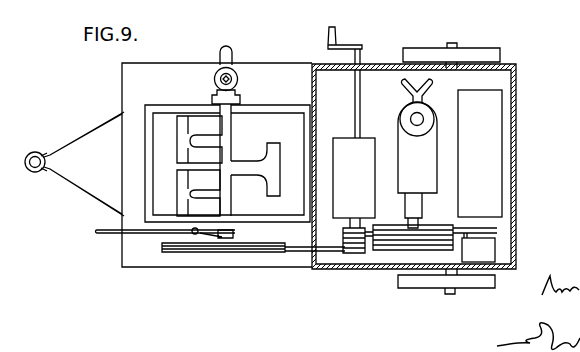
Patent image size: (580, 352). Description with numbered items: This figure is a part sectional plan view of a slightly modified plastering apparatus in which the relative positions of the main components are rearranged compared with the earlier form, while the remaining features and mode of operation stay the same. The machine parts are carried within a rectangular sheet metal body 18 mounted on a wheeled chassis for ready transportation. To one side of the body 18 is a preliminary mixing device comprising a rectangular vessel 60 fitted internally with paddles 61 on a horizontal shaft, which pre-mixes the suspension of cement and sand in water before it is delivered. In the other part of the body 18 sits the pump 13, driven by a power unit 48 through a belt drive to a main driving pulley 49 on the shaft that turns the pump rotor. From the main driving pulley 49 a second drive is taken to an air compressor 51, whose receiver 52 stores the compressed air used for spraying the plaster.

The pump 13 is at (407, 138).
The rectangular sheet metal body 18 is at (517, 104).
The power unit 48 is at (351, 140).
The main driving pulley 49 is at (392, 247).
The air compressor 51 is at (493, 247).
The receiver 52 is at (480, 153).
The rectangular vessel 60 is at (163, 129).
The paddles 61 is at (240, 166).